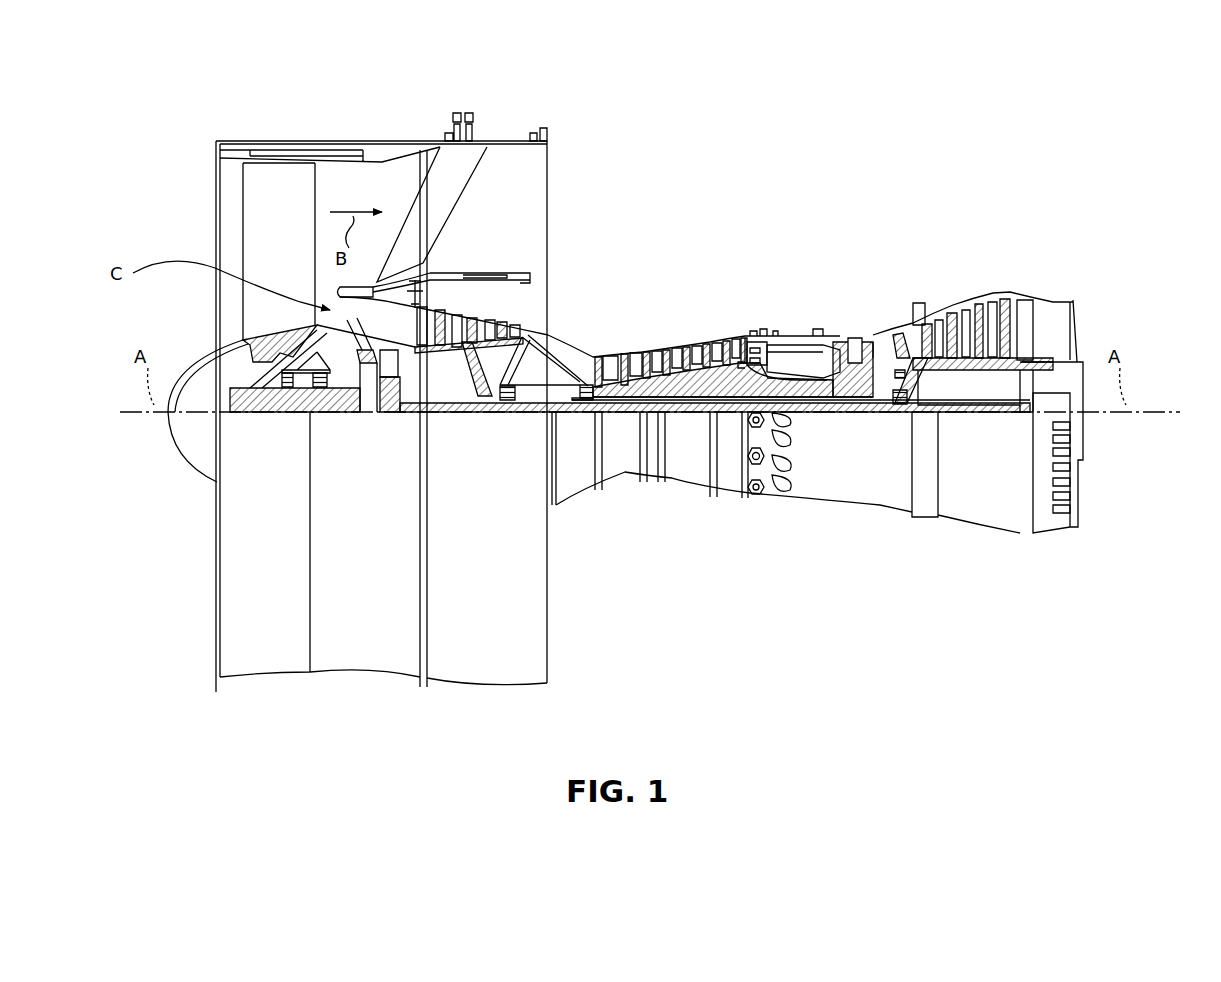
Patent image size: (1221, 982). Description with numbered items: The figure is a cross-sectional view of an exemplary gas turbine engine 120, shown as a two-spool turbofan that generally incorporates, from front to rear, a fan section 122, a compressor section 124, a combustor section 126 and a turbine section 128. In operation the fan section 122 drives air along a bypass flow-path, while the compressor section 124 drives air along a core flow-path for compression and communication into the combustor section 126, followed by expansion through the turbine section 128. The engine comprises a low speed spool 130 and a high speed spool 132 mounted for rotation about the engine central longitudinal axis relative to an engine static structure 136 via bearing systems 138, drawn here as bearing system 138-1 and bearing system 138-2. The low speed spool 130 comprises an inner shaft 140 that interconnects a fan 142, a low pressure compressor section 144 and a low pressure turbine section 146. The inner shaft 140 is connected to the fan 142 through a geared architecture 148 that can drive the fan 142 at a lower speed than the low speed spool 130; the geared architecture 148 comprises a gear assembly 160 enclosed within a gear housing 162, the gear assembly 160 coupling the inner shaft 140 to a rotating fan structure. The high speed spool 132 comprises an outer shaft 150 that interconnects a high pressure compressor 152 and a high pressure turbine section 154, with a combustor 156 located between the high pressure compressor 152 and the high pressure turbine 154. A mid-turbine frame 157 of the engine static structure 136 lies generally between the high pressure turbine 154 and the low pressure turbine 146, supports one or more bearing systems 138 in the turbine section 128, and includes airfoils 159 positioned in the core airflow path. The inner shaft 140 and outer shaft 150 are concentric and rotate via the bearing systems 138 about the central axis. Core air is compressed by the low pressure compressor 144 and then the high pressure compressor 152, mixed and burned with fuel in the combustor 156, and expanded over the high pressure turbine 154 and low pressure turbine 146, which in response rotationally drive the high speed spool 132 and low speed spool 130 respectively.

The gas turbine engine 120 is at (832, 158).
The fan section 122 is at (402, 128).
The compressor section 124 is at (752, 240).
The combustor section 126 is at (840, 240).
The turbine section 128 is at (1033, 240).
The low speed spool 130 is at (694, 420).
The high speed spool 132 is at (738, 358).
The engine static structure 136 is at (190, 668).
The bearing system 138 is at (897, 373).
The bearing system 138-1 is at (282, 410).
The bearing system 138-2 is at (503, 410).
The inner shaft 140 is at (563, 420).
The fan 142 is at (279, 417).
The low pressure compressor section 144 is at (493, 320).
The low pressure turbine section 146 is at (975, 290).
The geared architecture 148 is at (383, 385).
The outer shaft 150 is at (813, 415).
The high pressure compressor 152 is at (690, 345).
The high pressure turbine section 154 is at (853, 335).
The combustor 156 is at (800, 350).
The mid-turbine frame 157 is at (890, 365).
The airfoils 159 is at (918, 318).
The gear assembly 160 is at (372, 413).
The gear housing 162 is at (392, 413).